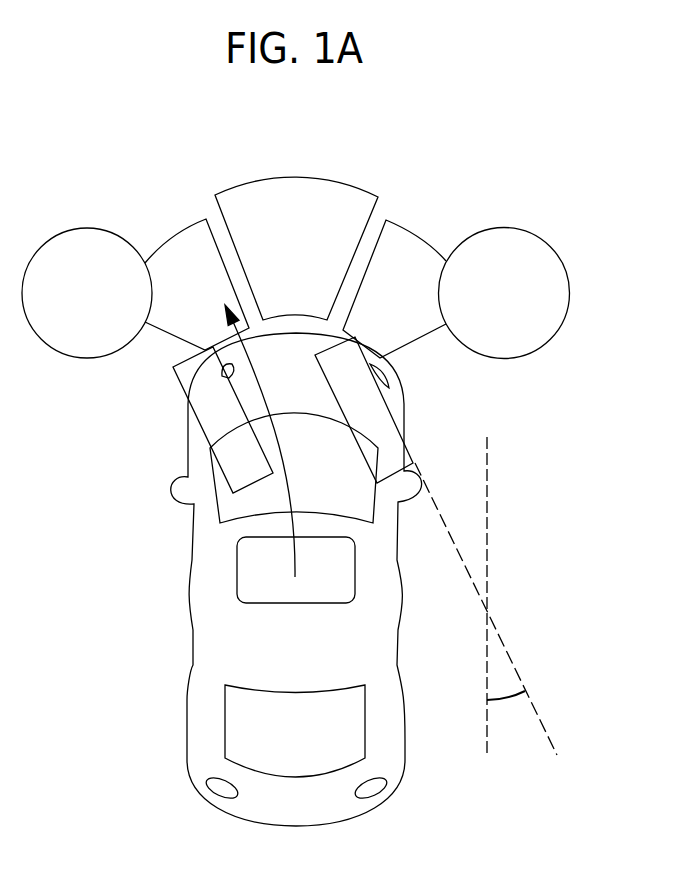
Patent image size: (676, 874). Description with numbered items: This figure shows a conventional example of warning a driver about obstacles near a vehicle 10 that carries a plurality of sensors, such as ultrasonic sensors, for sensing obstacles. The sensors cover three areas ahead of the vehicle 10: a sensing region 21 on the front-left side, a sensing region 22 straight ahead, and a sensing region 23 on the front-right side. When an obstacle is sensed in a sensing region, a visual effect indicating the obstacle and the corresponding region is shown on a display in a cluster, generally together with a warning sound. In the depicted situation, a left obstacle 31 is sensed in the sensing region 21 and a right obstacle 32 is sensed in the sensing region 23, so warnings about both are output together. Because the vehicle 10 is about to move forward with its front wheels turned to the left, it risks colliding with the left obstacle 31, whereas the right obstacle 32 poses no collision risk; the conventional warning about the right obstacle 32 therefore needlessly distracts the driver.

The vehicle 10 is at (186, 718).
The sensing region 21 is at (177, 248).
The sensing region 22 is at (295, 189).
The sensing region 23 is at (416, 248).
The left obstacle 31 is at (87, 240).
The right obstacle 32 is at (509, 242).